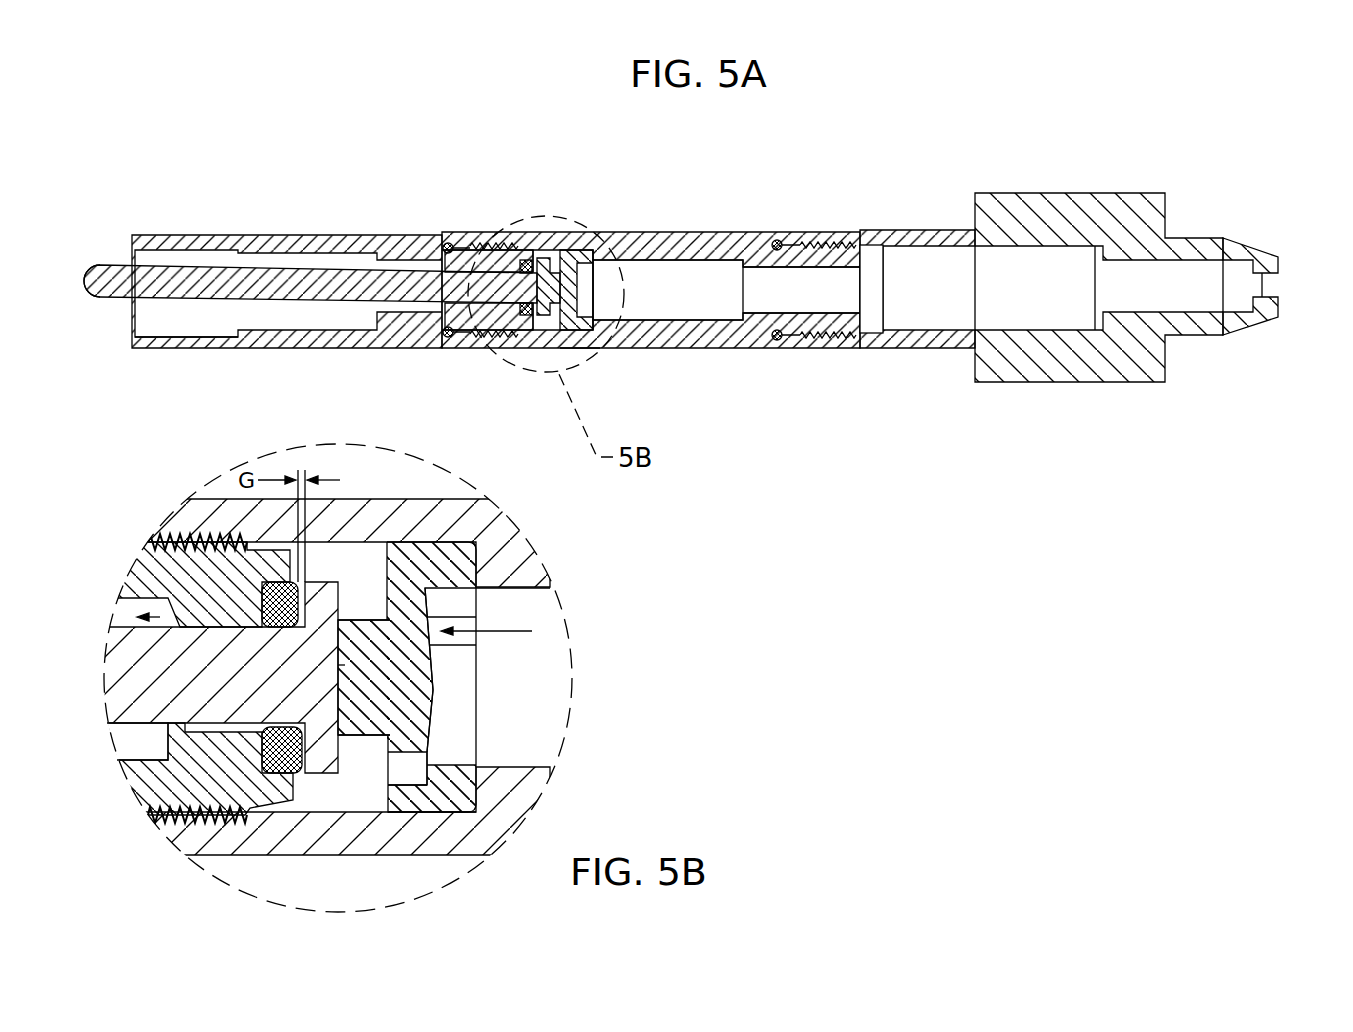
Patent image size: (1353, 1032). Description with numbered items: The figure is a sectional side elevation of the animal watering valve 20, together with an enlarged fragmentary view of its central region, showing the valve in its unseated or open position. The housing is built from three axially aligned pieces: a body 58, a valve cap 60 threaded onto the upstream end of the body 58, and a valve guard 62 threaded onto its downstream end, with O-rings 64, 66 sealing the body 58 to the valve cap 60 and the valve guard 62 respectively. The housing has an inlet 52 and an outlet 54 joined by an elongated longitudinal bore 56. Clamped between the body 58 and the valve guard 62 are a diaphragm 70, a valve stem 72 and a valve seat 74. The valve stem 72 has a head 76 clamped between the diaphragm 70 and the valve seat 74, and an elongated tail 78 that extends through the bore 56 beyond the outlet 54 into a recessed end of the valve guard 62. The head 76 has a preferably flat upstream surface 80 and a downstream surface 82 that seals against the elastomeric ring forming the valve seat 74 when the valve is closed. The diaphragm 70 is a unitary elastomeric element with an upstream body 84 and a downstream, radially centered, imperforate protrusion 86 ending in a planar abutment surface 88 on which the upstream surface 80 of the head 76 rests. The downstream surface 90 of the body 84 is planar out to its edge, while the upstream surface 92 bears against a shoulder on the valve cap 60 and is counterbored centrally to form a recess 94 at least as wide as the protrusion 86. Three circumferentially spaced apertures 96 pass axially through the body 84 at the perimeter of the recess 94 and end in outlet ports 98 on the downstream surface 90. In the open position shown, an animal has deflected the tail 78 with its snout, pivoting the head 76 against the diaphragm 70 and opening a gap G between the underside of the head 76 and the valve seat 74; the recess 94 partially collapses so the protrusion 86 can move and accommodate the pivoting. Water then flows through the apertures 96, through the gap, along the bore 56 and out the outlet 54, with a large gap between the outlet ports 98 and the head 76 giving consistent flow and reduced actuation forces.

In FIG. 5A, the animal watering valve 20 is at (1084, 119).
In FIG. 5A, the inlet 52 is at (1272, 280).
In FIG. 5A, the outlet 54 is at (140, 257).
In FIG. 5A, the longitudinal bore 56 is at (640, 265).
In FIG. 5A, the body 58 is at (605, 234).
In FIG. 5A, the valve cap 60 is at (1000, 193).
In FIG. 5A, the valve guard 62 is at (241, 236).
In FIG. 5A, the O-ring 64 is at (738, 232).
In FIG. 5A, the O-ring 66 is at (455, 235).
In FIG. 5A, the diaphragm 70 is at (582, 348).
In FIG. 5B, the diaphragm 70 is at (480, 538).
In FIG. 5A, the valve stem 72 is at (259, 308).
In FIG. 5B, the valve stem 72 is at (214, 677).
In FIG. 5A, the valve seat 74 is at (500, 345).
In FIG. 5B, the valve seat 74 is at (290, 580).
In FIG. 5B, the head 76 is at (362, 628).
In FIG. 5A, the tail 78 is at (172, 310).
In FIG. 5B, the tail 78 is at (107, 735).
In FIG. 5B, the upstream surface 80 is at (387, 750).
In FIG. 5B, the downstream surface 82 is at (288, 760).
In FIG. 5A, the body 84 is at (556, 245).
In FIG. 5B, the body 84 is at (460, 567).
In FIG. 5A, the protrusion 86 is at (518, 348).
In FIG. 5B, the protrusion 86 is at (380, 590).
In FIG. 5B, the abutment surface 88 is at (335, 665).
In FIG. 5B, the downstream surface 90 is at (430, 605).
In FIG. 5B, the upstream surface 92 is at (463, 797).
In FIG. 5B, the recess 94 is at (428, 760).
In FIG. 5A, the apertures 96 is at (598, 350).
In FIG. 5B, the apertures 96 is at (450, 812).
In FIG. 5B, the outlet ports 98 is at (430, 712).